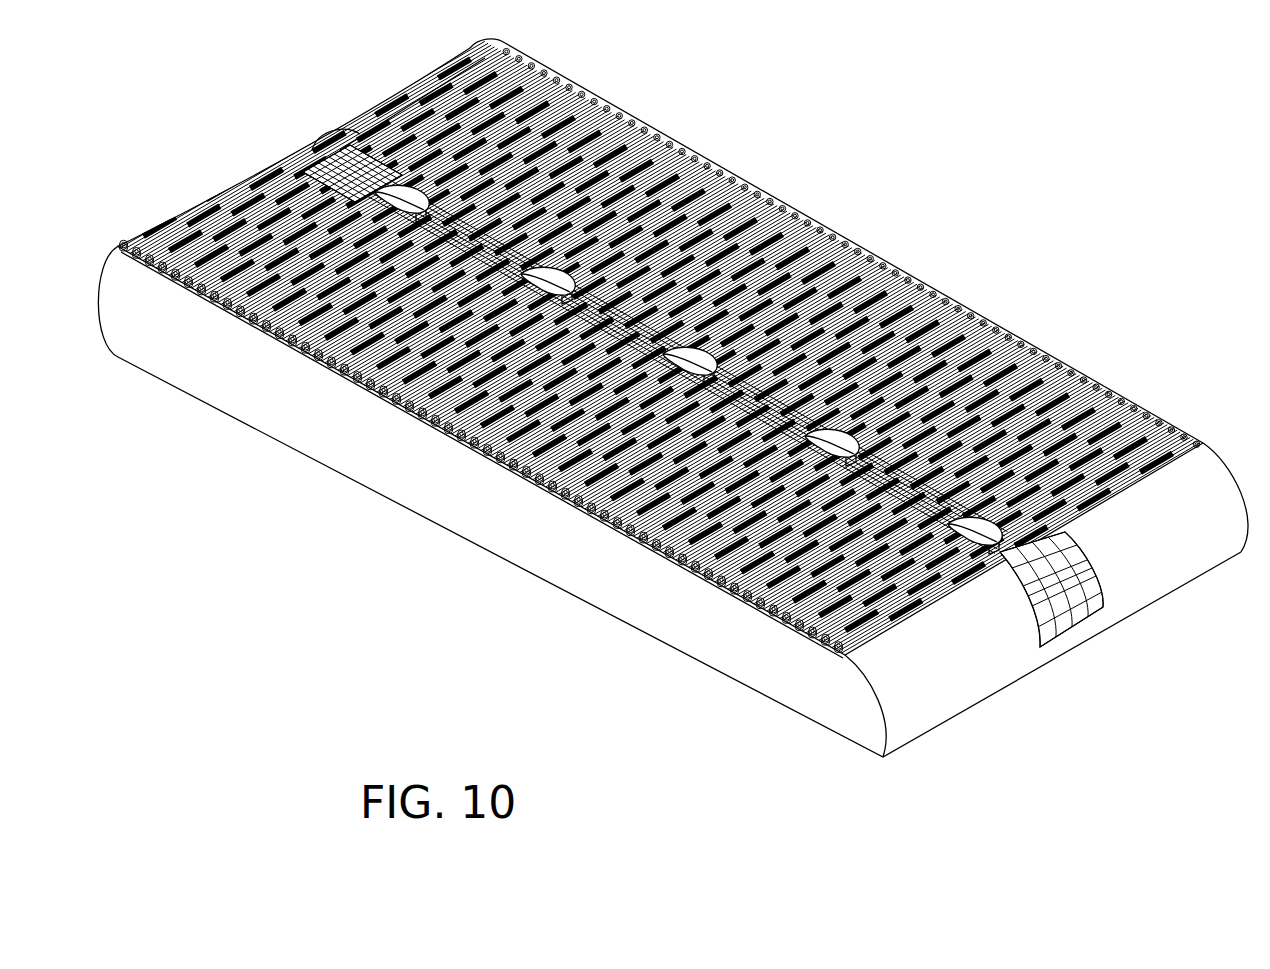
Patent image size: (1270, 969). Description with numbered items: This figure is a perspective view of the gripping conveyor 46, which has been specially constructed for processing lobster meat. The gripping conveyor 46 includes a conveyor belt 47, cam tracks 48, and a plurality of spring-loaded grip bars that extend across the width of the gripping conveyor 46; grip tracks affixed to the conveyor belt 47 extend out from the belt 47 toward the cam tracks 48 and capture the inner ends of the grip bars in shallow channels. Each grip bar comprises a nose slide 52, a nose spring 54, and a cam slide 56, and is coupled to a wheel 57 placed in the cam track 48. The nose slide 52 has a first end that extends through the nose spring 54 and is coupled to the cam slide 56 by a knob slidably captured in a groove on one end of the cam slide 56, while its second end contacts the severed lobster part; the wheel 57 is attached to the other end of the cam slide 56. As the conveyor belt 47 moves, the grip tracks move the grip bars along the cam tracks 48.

The gripping conveyor 46 is at (247, 465).
The conveyor belt 47 is at (307, 167).
The cam tracks 48 is at (652, 142).
The nose slide 52 is at (393, 120).
The nose spring 54 is at (437, 90).
The cam slide 56 is at (483, 67).
The wheel 57 is at (730, 203).